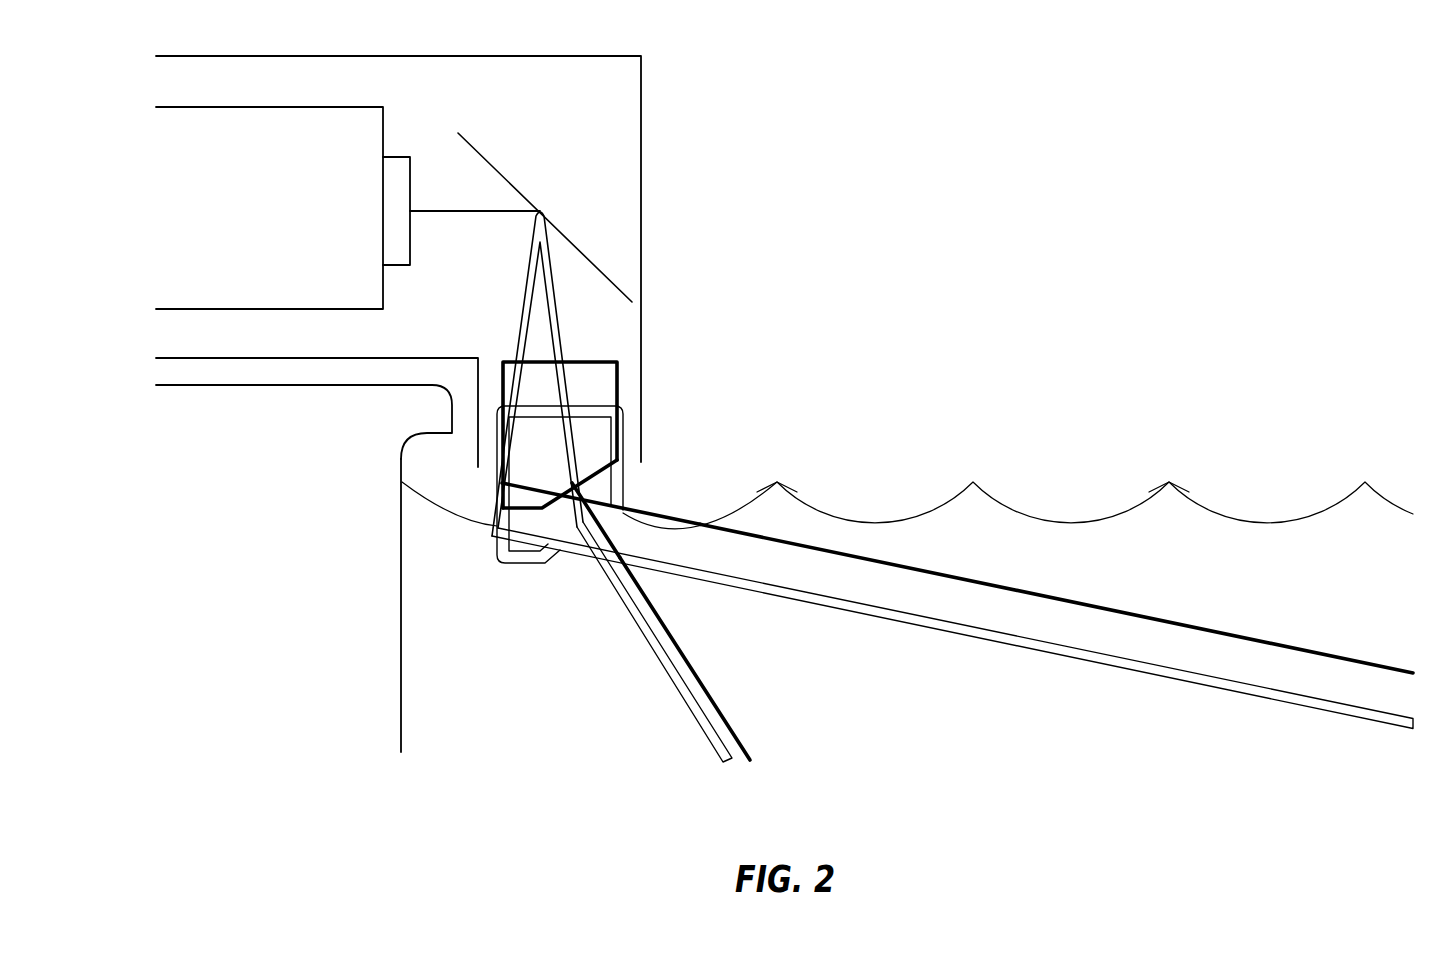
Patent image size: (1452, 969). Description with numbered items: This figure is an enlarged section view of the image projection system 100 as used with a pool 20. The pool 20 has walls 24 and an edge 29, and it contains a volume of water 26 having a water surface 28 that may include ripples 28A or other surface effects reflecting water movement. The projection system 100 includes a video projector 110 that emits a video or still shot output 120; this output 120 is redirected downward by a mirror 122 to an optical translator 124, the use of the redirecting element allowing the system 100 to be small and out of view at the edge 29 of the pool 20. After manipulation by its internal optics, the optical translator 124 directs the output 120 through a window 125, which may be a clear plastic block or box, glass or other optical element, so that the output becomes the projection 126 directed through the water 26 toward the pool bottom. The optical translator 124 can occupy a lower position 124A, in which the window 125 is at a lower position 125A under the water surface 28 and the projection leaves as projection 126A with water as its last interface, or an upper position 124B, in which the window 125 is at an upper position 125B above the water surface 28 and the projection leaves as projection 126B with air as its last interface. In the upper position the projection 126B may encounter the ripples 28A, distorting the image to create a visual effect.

The projection system 100 is at (650, 90).
The video projector 110 is at (290, 222).
The video or still shot output 120 is at (460, 210).
The mirror 122 is at (487, 160).
The optical translator 124 is at (620, 400).
The lower position 124A is at (624, 414).
The upper position 124B is at (605, 360).
The window 125 is at (629, 530).
The lower position of window 125A is at (683, 523).
The upper position of window 125B is at (618, 482).
The projection 126 is at (952, 646).
The projection with water as last interface 126A is at (1118, 667).
The projection with air as last interface 126B is at (1103, 608).
The pool 20 is at (317, 555).
The walls 24 is at (401, 592).
The water 26 is at (1367, 597).
The water surface 28 is at (907, 468).
The ripples 28A is at (778, 482).
The edge 29 is at (452, 413).